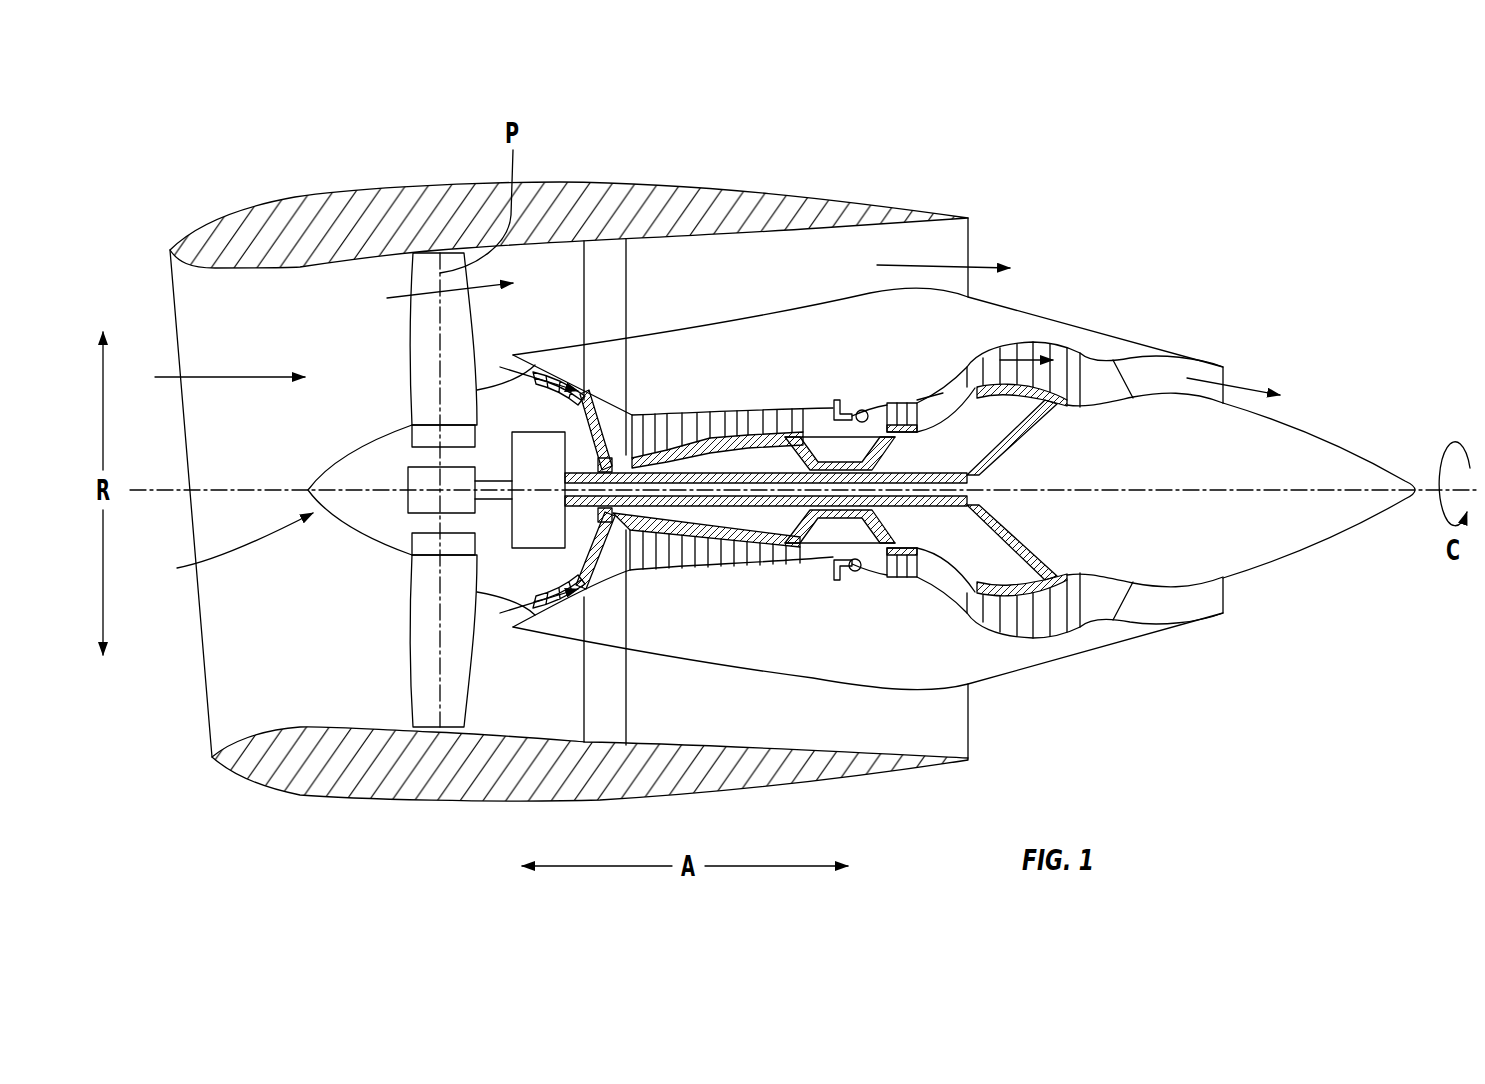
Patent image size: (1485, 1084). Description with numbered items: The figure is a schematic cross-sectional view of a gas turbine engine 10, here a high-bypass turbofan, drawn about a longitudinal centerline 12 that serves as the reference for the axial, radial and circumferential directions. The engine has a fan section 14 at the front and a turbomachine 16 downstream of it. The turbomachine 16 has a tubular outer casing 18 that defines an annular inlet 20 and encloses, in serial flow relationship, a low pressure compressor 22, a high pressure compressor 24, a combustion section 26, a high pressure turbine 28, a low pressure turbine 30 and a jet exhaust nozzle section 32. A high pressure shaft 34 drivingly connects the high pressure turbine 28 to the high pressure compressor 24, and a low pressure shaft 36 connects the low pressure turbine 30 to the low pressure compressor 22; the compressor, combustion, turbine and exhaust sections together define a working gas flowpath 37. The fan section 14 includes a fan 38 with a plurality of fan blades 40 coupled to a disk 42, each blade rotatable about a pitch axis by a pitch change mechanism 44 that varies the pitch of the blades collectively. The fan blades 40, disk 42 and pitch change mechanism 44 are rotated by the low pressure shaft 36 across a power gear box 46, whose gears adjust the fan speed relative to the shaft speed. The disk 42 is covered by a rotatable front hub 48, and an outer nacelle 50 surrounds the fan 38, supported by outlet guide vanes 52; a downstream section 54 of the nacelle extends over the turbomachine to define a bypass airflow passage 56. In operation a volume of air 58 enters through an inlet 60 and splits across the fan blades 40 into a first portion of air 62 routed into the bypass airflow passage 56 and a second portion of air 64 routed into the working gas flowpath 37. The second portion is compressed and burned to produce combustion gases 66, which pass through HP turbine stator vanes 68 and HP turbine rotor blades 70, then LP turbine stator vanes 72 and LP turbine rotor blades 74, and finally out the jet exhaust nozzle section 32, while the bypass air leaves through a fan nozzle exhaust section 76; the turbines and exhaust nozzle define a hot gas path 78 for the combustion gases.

The gas turbine engine 10 is at (1130, 200).
The longitudinal centerline 12 is at (1157, 490).
The fan section 14 is at (370, 273).
The turbomachine 16 is at (741, 352).
The tubular outer casing 18 is at (803, 677).
The annular inlet 20 is at (520, 607).
The low pressure compressor 22 is at (570, 577).
The high pressure compressor 24 is at (660, 550).
The combustion section 26 is at (853, 573).
The high pressure turbine 28 is at (925, 567).
The low pressure turbine 30 is at (1053, 643).
The jet exhaust nozzle section 32 is at (1127, 622).
The high pressure shaft 34 is at (863, 422).
The low pressure shaft 36 is at (923, 470).
The working gas flowpath 37 is at (607, 555).
The fan 38 is at (372, 552).
The fan blades 40 is at (410, 640).
The disk 42 is at (433, 438).
The pitch change mechanism 44 is at (408, 477).
The power gear box 46 is at (610, 418).
The front hub 48 is at (227, 550).
The outer nacelle 50 is at (463, 802).
The outlet guide vanes 52 is at (628, 288).
The downstream section 54 is at (907, 210).
The bypass airflow passage 56 is at (842, 269).
The volume of air 58 is at (238, 377).
The inlet 60 is at (207, 730).
The first portion of air 62 is at (428, 298).
The second portion of air 64 is at (505, 367).
The combustion gases 66 is at (1017, 340).
The HP turbine stator vanes 68 is at (880, 582).
The HP turbine rotor blades 70 is at (903, 578).
The LP turbine stator vanes 72 is at (977, 608).
The LP turbine rotor blades 74 is at (990, 627).
The fan nozzle exhaust section 76 is at (955, 248).
The hot gas path 78 is at (950, 378).